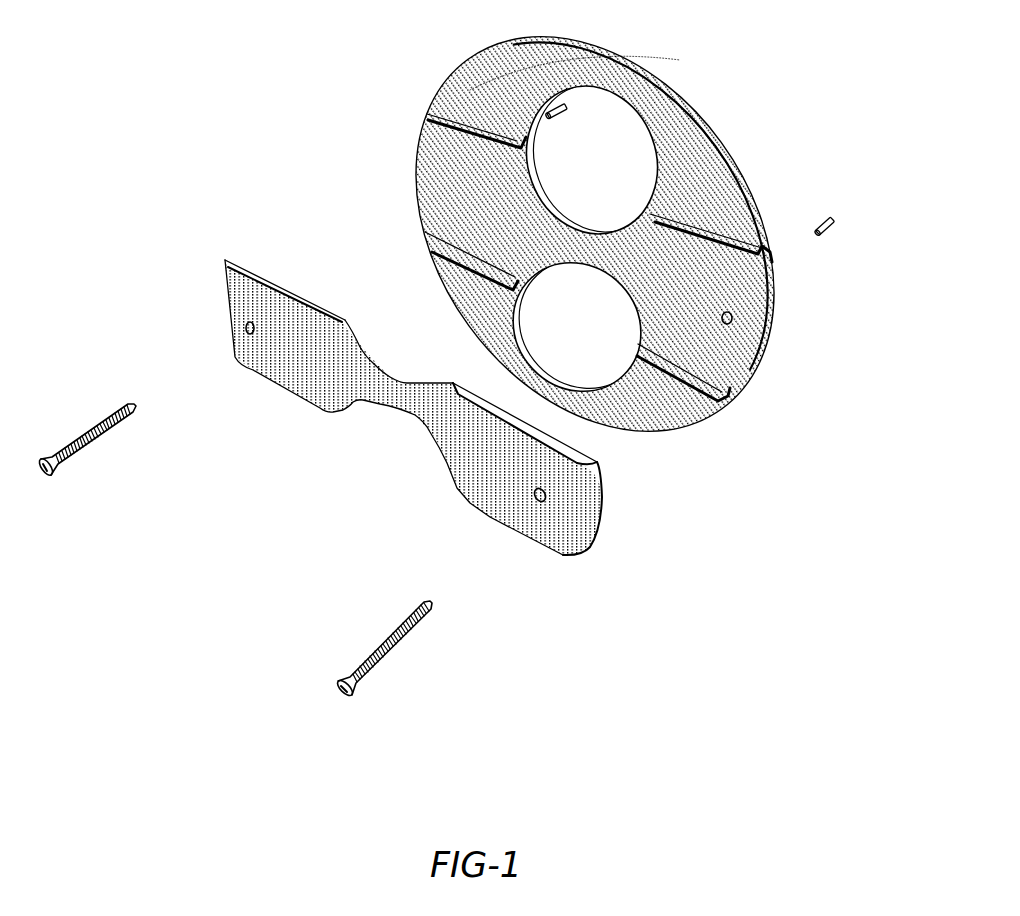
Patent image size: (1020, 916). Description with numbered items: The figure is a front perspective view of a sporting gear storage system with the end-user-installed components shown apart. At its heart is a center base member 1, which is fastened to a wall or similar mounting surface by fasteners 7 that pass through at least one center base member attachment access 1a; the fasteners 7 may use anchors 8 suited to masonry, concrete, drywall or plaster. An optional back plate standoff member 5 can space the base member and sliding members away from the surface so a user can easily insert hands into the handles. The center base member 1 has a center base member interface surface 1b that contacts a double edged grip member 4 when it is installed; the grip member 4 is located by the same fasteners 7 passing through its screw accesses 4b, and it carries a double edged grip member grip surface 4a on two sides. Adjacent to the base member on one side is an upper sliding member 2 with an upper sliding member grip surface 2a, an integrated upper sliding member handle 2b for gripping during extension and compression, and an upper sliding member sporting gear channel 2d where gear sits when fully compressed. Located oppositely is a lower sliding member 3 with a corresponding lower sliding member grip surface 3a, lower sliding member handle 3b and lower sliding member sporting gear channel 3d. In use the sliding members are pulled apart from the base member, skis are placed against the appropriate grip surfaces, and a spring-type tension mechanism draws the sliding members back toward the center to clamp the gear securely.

The center base member 1 is at (782, 283).
The center base member attachment access 1a is at (733, 317).
The center base member interface surface 1b is at (720, 343).
The upper sliding member 2 is at (713, 130).
The upper sliding member grip surface 2a is at (753, 250).
The upper sliding member handle 2b is at (592, 62).
The upper sliding member sporting gear channel 2d is at (772, 258).
The lower sliding member 3 is at (708, 428).
The lower sliding member grip surface 3a is at (728, 393).
The lower sliding member handle 3b is at (570, 375).
The lower sliding member sporting gear channel 3d is at (730, 397).
The double edged grip member 4 is at (603, 482).
The double edged grip member grip surface 4a is at (575, 455).
The screw access 4b is at (540, 500).
The back plate standoff member 5 is at (538, 137).
The fastener 7 is at (102, 433).
The anchor 8 is at (565, 110).